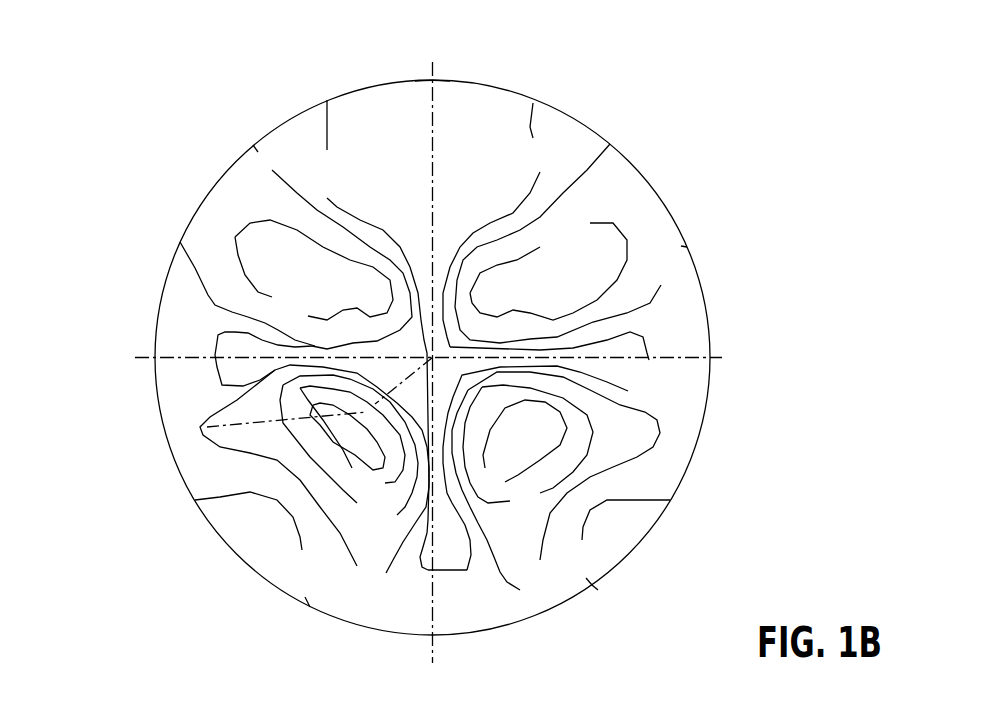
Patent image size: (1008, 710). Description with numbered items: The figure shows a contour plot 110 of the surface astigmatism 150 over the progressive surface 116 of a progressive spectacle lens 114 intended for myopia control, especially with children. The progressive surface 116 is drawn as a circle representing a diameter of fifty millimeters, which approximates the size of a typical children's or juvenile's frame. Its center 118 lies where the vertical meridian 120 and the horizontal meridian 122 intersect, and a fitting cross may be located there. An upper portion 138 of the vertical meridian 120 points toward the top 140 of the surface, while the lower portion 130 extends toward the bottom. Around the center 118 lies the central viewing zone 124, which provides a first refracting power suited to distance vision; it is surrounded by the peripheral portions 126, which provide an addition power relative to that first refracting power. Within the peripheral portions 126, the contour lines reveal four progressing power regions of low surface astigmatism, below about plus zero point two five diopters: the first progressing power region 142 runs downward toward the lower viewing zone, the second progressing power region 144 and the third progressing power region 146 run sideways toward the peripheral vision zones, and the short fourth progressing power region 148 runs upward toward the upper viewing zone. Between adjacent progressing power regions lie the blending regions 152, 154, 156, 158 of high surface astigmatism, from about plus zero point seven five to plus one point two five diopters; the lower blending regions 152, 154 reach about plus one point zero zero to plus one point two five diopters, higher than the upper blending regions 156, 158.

The contour plot 110 is at (506, 323).
The surface astigmatism 150 is at (506, 323).
The progressive spectacle lens 114 is at (506, 323).
The progressive surface 116 is at (699, 126).
The vertical meridian 120 is at (342, 354).
The upper portion of the vertical meridian 138 is at (427, 103).
The lower axis end / outlet axis 130 is at (432, 610).
The horizontal meridian 122 is at (130, 352).
The center 118 is at (207, 427).
The central viewing zone 124 is at (446, 373).
The top 140 is at (461, 108).
The peripheral portions 126 is at (423, 389).
The fourth progressing power region 148 is at (437, 276).
The third progressing power region 146 is at (564, 351).
The second progressing power region 144 is at (286, 362).
The first progressing power region 142 is at (448, 505).
The blending region 156 is at (286, 262).
The blending region 158 is at (579, 262).
The blending region 154 is at (334, 445).
The blending region 152 is at (554, 428).